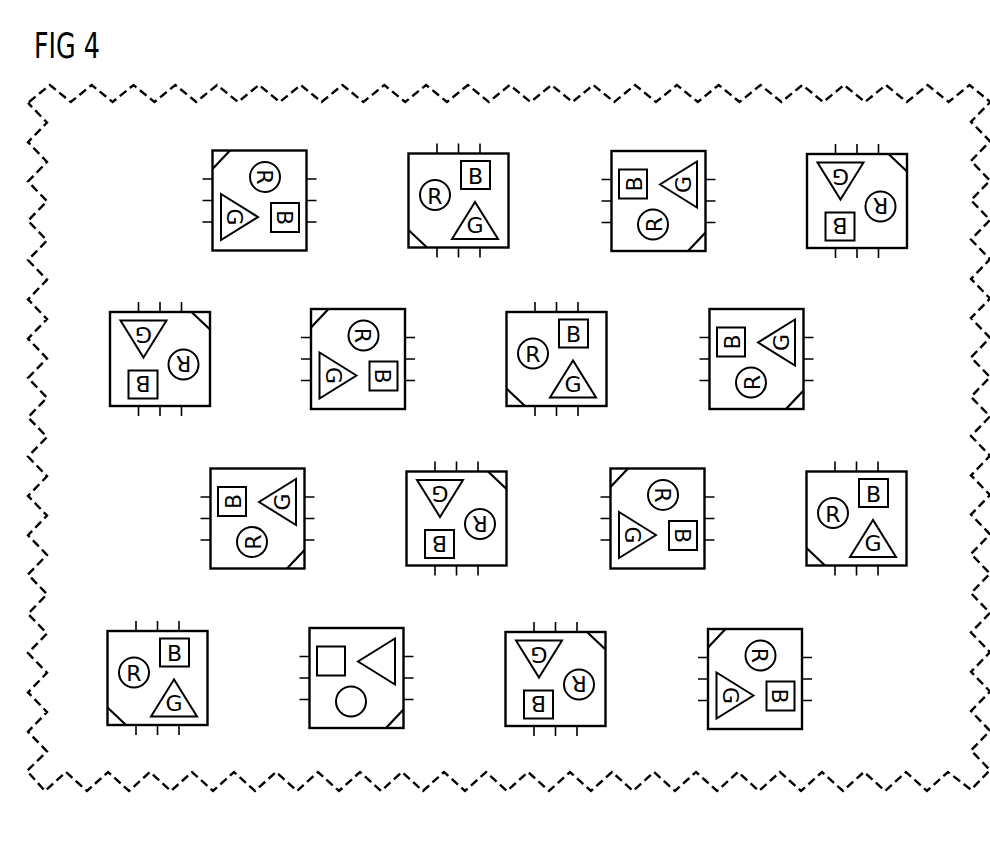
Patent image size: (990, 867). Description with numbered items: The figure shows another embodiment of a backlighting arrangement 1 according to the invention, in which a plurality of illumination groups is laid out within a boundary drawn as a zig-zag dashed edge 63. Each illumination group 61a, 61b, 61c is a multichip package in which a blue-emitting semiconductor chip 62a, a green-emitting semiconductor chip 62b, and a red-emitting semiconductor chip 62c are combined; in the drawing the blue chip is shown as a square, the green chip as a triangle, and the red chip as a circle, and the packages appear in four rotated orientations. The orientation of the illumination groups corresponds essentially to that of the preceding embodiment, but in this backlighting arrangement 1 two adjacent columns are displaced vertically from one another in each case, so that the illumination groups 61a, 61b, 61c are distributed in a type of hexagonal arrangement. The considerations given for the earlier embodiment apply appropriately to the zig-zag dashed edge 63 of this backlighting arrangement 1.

The backlighting arrangement 1 is at (933, 73).
The zig-zag dashed edge 63 is at (543, 91).
The illumination group 61a is at (210, 355).
The illumination group 61b is at (258, 467).
The illumination group 61c is at (358, 307).
The blue-emitting semiconductor chip 62a is at (315, 661).
The green-emitting semiconductor chip 62b is at (378, 653).
The red-emitting semiconductor chip 62c is at (337, 701).